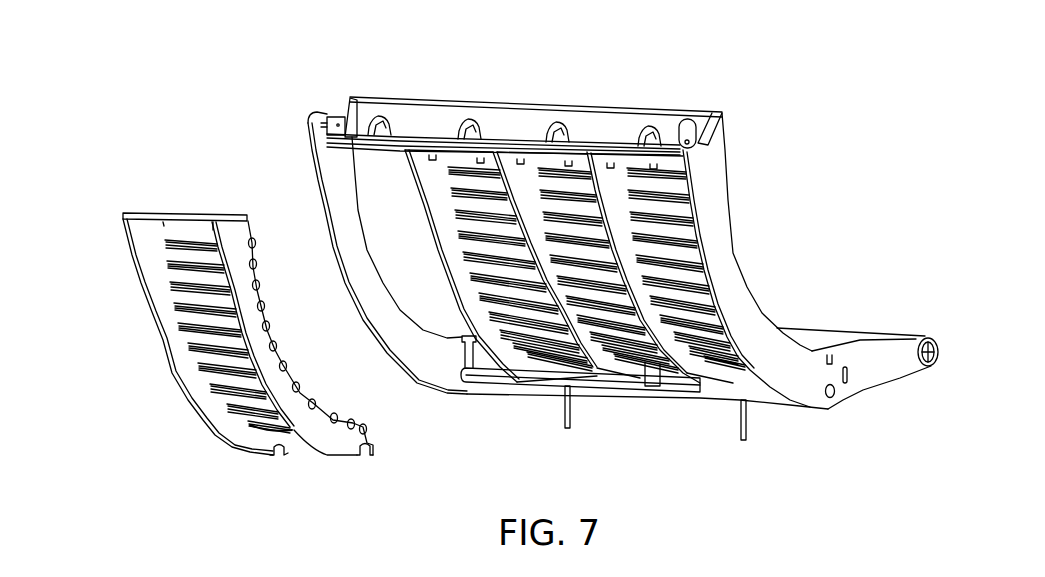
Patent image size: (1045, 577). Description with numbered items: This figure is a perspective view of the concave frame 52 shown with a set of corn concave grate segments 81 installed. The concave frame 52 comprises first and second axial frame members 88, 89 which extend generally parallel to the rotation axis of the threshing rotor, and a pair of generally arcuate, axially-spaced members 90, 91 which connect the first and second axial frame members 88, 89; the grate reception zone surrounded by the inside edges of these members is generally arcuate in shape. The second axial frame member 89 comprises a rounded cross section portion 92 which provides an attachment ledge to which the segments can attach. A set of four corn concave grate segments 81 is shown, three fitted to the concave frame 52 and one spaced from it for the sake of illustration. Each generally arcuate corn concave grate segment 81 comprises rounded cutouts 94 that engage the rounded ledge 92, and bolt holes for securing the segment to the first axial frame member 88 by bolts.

The concave frame 52 is at (707, 198).
The corn concave grate segment 81 is at (530, 365).
The first axial frame member 88 is at (608, 120).
The second axial frame member 89 is at (670, 397).
The arcuate member 90 is at (530, 291).
The arcuate member 91 is at (325, 190).
The rounded cross section portion 92 is at (490, 378).
The rounded cutout 94 is at (274, 456).